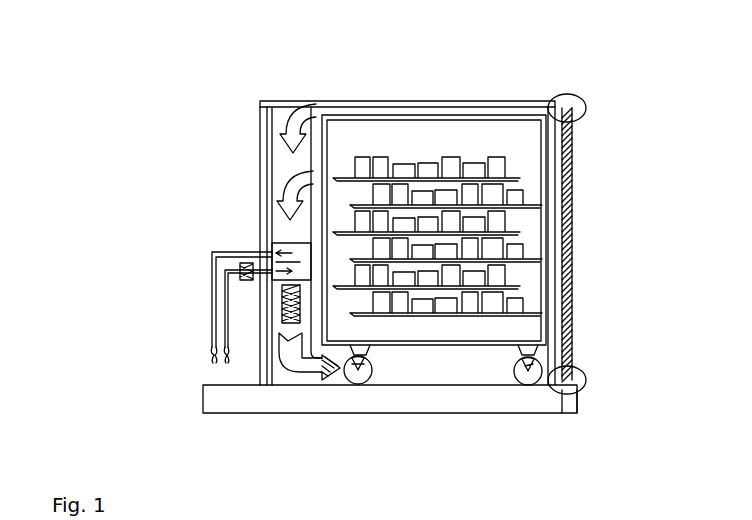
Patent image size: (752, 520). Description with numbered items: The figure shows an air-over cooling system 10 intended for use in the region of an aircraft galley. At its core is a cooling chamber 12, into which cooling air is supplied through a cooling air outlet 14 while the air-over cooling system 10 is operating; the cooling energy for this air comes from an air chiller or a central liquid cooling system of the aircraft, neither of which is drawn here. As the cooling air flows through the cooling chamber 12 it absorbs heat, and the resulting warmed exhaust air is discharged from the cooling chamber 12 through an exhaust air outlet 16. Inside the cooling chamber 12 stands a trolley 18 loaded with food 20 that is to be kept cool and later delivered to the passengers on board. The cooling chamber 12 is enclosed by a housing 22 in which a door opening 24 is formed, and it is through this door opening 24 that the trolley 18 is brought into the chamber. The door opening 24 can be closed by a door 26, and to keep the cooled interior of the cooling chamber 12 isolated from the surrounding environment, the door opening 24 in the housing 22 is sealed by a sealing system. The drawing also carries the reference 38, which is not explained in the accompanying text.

The treatment apparatus 10 is at (140, 155).
The housing 12 is at (352, 92).
The air outlet / fan unit 14 is at (300, 372).
The air circulation duct 16 is at (313, 101).
The treatment chamber 18 is at (407, 135).
The shelf rack with goods 20 is at (442, 287).
The housing top wall 22 is at (463, 100).
The base plate 24 is at (563, 398).
The support column 26 is at (572, 220).
The pivot joints 38 is at (577, 360).